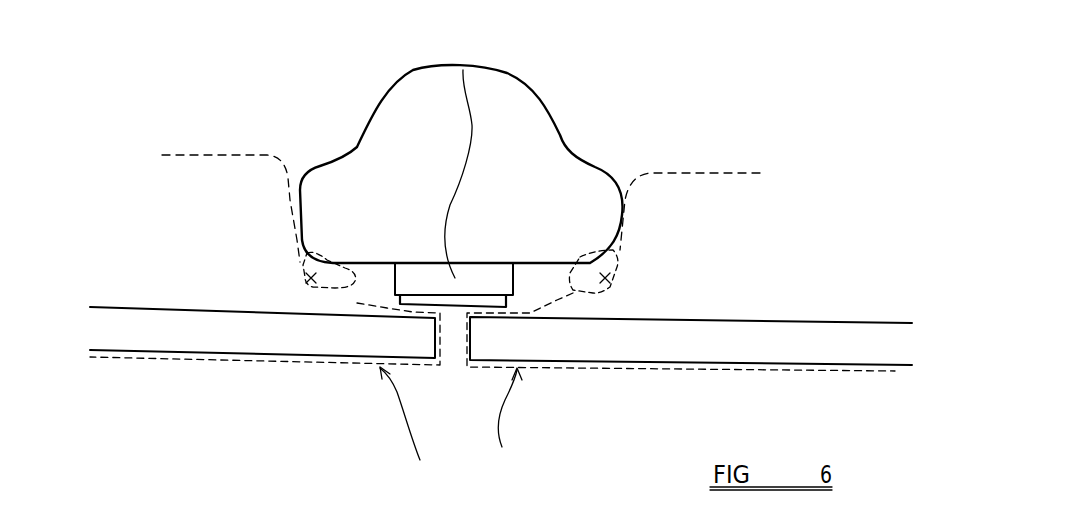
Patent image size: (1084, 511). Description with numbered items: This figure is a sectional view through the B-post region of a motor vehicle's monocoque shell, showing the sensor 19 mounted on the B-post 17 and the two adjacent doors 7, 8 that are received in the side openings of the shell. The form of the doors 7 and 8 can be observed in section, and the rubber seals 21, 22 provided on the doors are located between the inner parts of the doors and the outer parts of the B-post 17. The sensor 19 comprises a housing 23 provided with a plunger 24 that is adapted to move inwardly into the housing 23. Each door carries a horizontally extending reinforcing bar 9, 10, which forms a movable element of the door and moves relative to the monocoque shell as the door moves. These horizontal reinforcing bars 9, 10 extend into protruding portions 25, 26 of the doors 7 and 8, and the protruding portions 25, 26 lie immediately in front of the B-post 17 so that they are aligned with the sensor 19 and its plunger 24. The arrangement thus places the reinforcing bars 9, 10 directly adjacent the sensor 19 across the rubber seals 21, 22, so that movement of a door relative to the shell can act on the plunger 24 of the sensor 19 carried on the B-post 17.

The door 7 is at (142, 360).
The door 8 is at (728, 197).
The reinforcing bar 9 is at (307, 340).
The reinforcing bar 10 is at (572, 348).
The B-post 17 is at (563, 127).
The sensor 19 is at (463, 70).
The rubber seal 21 is at (300, 285).
The rubber seal 22 is at (617, 294).
The housing 23 is at (497, 283).
The plunger 24 is at (418, 302).
The protruding portion 25 is at (400, 423).
The protruding portion 26 is at (508, 425).